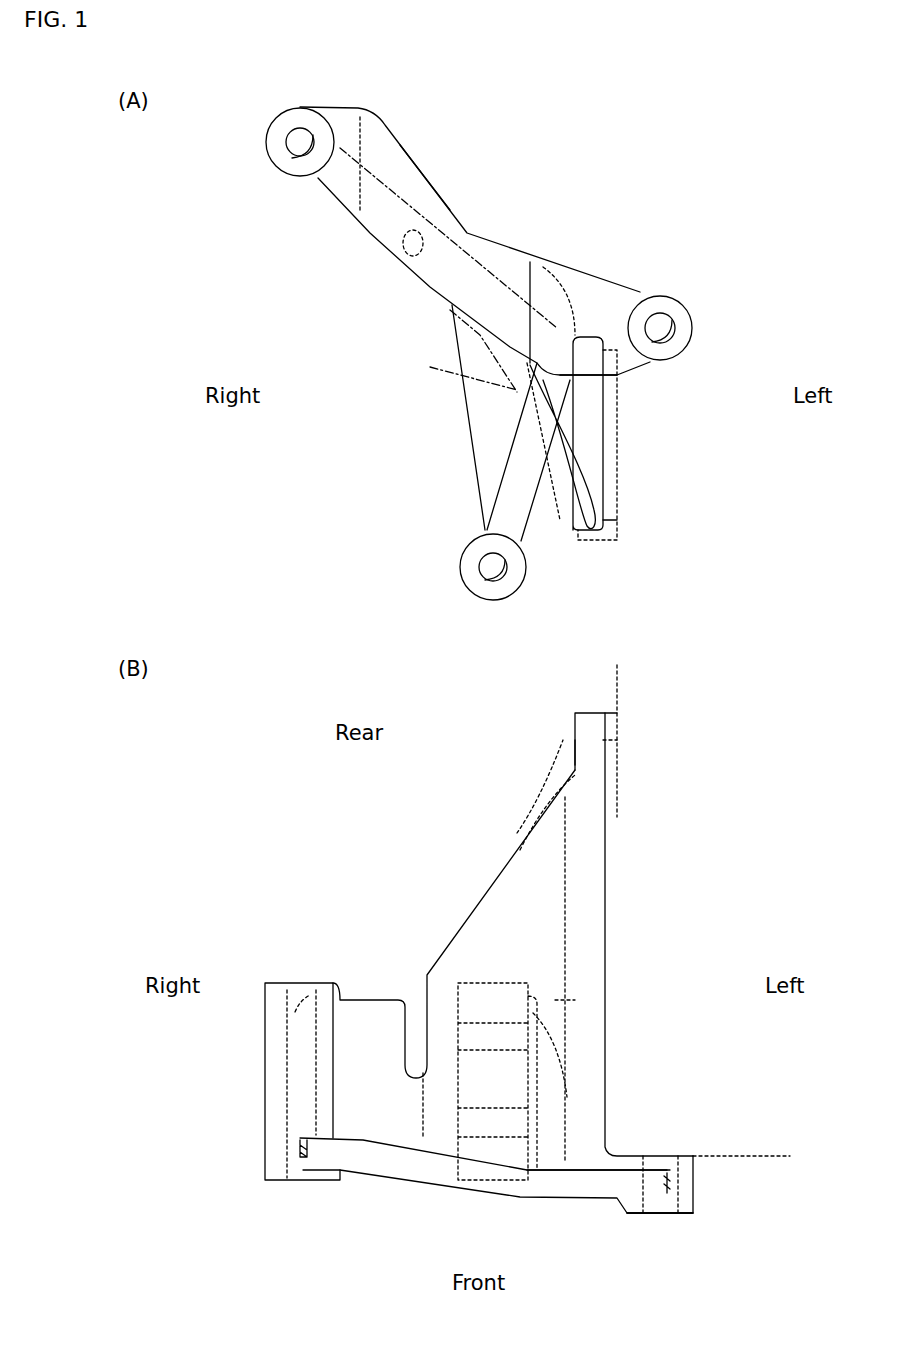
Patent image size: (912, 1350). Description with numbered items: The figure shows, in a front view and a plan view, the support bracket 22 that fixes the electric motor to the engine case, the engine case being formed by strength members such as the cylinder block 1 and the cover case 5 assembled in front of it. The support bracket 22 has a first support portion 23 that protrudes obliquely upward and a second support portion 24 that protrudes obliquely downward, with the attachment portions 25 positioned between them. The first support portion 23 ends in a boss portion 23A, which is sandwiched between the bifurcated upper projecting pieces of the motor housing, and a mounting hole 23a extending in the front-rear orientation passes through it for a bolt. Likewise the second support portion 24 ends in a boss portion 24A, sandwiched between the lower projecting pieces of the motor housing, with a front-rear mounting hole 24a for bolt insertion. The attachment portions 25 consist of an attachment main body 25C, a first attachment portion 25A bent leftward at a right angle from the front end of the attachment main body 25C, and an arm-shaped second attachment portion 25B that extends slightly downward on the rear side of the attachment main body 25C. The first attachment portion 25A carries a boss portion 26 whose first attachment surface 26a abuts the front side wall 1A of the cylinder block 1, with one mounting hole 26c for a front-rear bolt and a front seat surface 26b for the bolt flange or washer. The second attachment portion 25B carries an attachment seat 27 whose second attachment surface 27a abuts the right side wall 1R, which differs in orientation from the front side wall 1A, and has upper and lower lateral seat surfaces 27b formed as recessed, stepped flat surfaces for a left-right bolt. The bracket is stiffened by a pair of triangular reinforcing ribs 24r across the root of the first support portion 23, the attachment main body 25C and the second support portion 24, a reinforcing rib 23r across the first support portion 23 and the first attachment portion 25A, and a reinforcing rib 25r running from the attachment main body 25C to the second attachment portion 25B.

The support bracket 22 is at (516, 460).
The first support portion 23 is at (462, 592).
The boss portion 23A is at (256, 644).
The mounting hole 23a is at (243, 570).
The reinforcing rib 23r is at (496, 677).
The second support portion 24 is at (455, 458).
The boss portion 24A is at (433, 568).
The mounting hole 24a is at (553, 577).
The reinforcing ribs 24r is at (410, 721).
The attachment portions 25 is at (620, 709).
The first attachment portion 25A is at (580, 712).
The second attachment portion 25B is at (625, 673).
The attachment main body 25C is at (592, 1073).
The reinforcing rib 25r is at (451, 587).
The boss portion 26 is at (693, 730).
The first attachment surface 26a is at (684, 1123).
The front seat surface 26b is at (693, 1219).
The mounting hole 26c is at (696, 753).
The attachment seat 27 is at (570, 567).
The second attachment surface 27a is at (663, 627).
The lateral seat surfaces 27b is at (490, 763).
The cylinder block 1 is at (552, 741).
The front side wall 1A is at (754, 1196).
The right side wall 1R is at (512, 812).
The cover case 5 is at (552, 987).